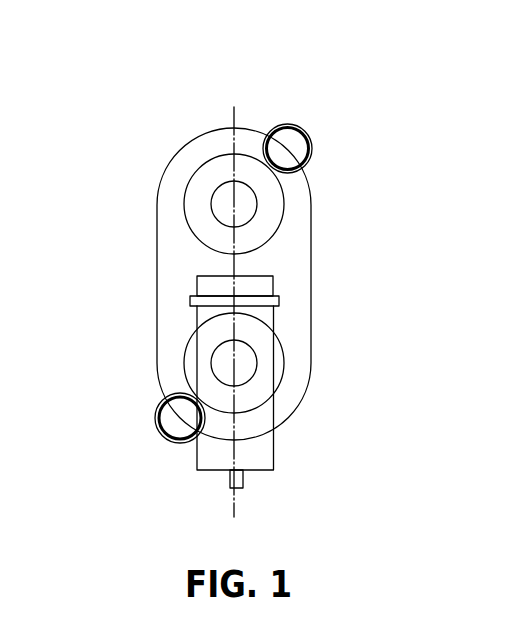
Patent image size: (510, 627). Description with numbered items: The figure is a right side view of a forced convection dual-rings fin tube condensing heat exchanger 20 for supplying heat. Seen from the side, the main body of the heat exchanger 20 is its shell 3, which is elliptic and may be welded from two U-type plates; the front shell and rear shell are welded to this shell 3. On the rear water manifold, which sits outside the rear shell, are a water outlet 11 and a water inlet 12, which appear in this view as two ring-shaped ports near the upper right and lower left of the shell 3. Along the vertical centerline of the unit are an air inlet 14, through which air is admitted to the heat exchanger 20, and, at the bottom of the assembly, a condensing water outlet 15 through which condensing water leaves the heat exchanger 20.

The heat exchanger 20 is at (275, 85).
The shell 3 is at (170, 203).
The water outlet 11 is at (292, 150).
The water inlet 12 is at (177, 418).
The air inlet 14 is at (247, 360).
The condensing water outlet 15 is at (243, 480).